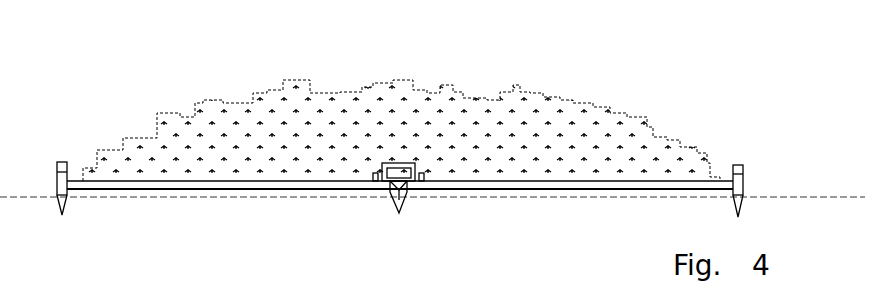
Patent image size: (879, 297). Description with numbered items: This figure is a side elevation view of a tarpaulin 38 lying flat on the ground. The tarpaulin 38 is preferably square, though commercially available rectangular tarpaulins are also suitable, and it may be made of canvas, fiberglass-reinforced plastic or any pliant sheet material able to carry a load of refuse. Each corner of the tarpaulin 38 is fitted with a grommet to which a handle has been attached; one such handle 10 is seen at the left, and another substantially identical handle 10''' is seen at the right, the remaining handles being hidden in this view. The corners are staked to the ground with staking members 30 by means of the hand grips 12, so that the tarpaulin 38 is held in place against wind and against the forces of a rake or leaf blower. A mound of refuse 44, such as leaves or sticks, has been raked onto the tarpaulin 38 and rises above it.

The handle 10 is at (227, 177).
The handle 10''' is at (782, 166).
The hand grip 12 is at (407, 161).
The staking member 30 is at (406, 204).
The tarpaulin 38 is at (650, 187).
The mound of refuse 44 is at (560, 100).